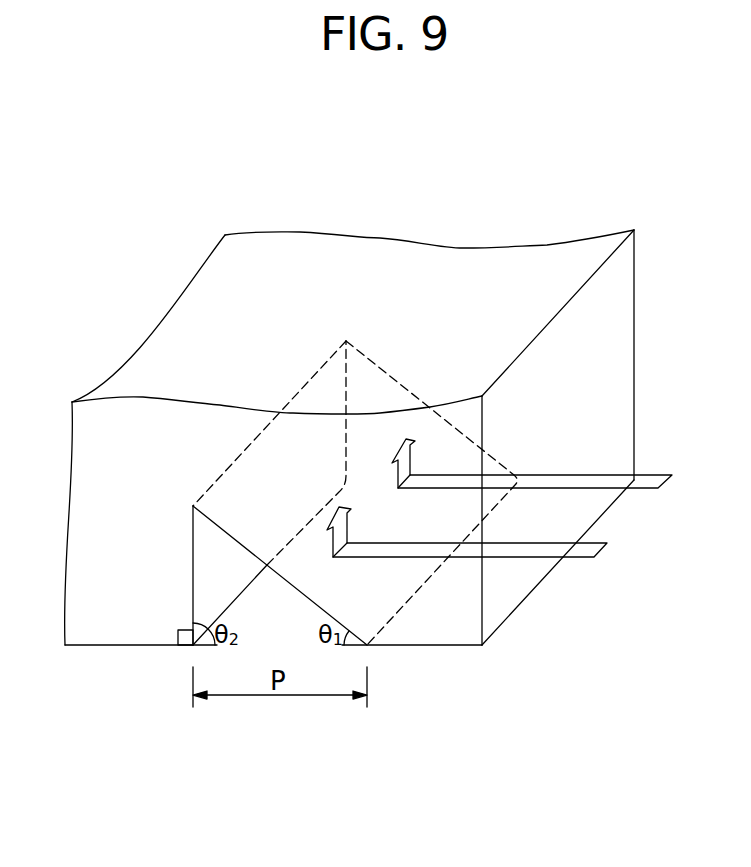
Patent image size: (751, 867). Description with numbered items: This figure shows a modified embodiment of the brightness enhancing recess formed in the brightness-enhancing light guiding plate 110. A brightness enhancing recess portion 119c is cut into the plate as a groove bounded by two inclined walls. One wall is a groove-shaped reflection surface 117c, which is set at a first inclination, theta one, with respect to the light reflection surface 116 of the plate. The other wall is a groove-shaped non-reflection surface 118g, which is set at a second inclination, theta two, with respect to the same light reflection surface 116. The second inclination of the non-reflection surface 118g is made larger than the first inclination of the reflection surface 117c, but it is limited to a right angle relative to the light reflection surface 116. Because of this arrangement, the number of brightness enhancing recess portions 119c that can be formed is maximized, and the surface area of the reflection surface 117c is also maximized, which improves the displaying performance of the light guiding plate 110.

The light guide plate 110 is at (623, 357).
The light reflection surface 116 is at (513, 603).
The groove-shaped reflection surface 117c is at (358, 595).
The groove-shaped non-reflection surface 118g is at (240, 583).
The brightness enhancing recess portion 119c is at (306, 641).